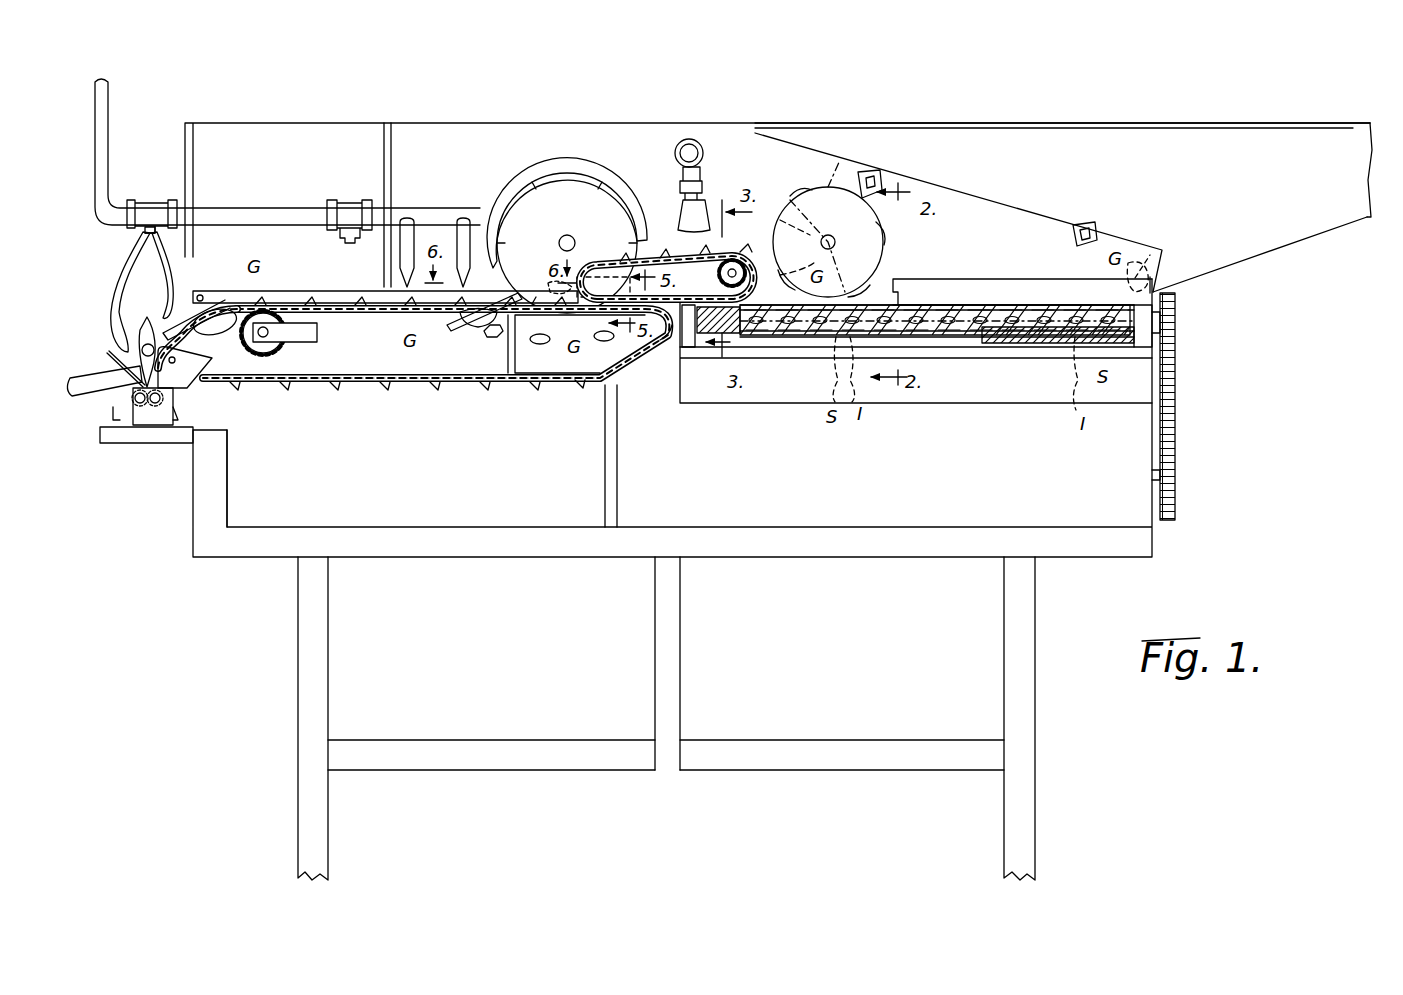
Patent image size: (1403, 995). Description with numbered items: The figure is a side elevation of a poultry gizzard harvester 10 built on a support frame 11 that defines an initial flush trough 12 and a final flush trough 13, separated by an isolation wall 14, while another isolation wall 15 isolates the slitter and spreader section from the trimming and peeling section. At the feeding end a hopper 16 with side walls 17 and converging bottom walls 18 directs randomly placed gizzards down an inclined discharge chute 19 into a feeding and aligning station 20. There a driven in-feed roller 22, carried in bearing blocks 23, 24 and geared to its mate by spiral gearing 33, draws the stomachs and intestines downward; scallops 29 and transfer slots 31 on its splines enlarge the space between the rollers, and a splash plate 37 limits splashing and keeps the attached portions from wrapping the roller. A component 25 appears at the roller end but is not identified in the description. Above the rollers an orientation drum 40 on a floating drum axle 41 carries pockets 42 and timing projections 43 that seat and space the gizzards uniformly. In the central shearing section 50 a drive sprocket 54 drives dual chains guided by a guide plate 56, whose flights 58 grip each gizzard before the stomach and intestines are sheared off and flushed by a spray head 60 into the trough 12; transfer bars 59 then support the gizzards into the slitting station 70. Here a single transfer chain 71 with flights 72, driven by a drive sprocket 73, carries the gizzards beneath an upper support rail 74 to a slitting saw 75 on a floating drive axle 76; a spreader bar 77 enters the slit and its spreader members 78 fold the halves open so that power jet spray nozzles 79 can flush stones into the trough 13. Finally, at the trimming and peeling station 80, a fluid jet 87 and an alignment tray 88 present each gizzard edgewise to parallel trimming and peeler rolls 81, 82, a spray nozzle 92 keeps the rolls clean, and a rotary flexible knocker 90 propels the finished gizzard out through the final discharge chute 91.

The gizzard harvester 10 is at (1218, 437).
The support frame 11 is at (490, 142).
The initial flush trough 12 is at (936, 492).
The final flush trough 13 is at (510, 513).
The isolation wall 14 is at (617, 500).
The isolation wall 15 is at (384, 148).
The hopper 16 is at (1142, 148).
The side walls 17 is at (1258, 150).
The converging bottom walls 18 is at (1032, 212).
The inclined discharge chute 19 is at (1200, 273).
The feeding and aligning station 20 is at (949, 254).
The in-feed roller 22 is at (985, 305).
The bearing block 23 is at (1142, 340).
The bearing block 24 is at (688, 343).
The hand wheel 25 is at (1177, 323).
The scallops 29 is at (905, 318).
The transfer slots 31 is at (951, 310).
The spiral gearing 33 is at (723, 332).
The splash plate 37 is at (1040, 285).
The orientation drum 40 is at (850, 223).
The drum axle 41 is at (836, 242).
The pockets 42 is at (900, 248).
The timing projections 43 is at (795, 195).
The central shearing section 50 is at (735, 100).
The drive sprocket 54 is at (738, 258).
The guide plate 56 is at (605, 273).
The flights 58 is at (660, 248).
The transfer bars 59 is at (672, 340).
The spray head 60 is at (680, 162).
The slitting station 70 is at (451, 100).
The single transfer chain 71 is at (456, 383).
The flights 72 is at (535, 385).
The drive sprocket 73 is at (288, 355).
The upper support rail 74 is at (552, 288).
The slitting saw 75 is at (570, 190).
The drive axle 76 is at (567, 235).
The spreader bar 77 is at (352, 283).
The spreader members 78 is at (457, 323).
The power jet spray nozzles 79 is at (465, 240).
The trimming and peeling station 80 is at (165, 470).
The trimming and peeler roll 81 is at (175, 400).
The trimming and peeler roll 82 is at (138, 405).
The fluid jet 87 is at (128, 282).
The alignment tray 88 is at (110, 358).
The rotary flexible knocker 90 is at (140, 325).
The final discharge chute 91 is at (83, 392).
The spray nozzle 92 is at (170, 275).